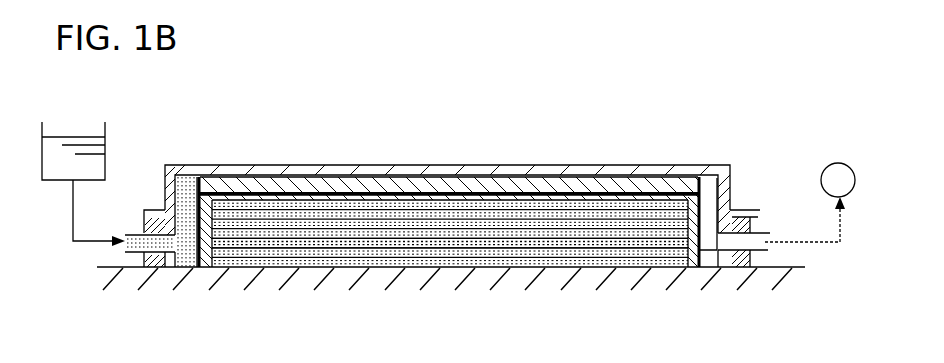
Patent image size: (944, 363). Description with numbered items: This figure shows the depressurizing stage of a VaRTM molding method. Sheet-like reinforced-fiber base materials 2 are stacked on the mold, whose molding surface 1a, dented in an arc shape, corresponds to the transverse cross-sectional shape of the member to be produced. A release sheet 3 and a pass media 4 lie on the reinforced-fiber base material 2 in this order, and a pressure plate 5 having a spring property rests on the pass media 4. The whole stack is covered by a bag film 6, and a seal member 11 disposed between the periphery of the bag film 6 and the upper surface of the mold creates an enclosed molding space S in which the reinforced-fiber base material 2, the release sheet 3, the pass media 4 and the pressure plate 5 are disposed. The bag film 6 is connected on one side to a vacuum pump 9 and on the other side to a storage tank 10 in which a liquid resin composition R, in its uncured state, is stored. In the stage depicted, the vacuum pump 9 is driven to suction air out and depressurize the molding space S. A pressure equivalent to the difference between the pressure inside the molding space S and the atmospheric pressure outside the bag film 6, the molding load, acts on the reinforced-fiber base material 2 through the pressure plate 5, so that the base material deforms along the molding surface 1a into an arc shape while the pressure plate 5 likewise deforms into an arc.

The molding surface 1a is at (805, 266).
The reinforced-fiber base material 2 is at (260, 266).
The release sheet 3 is at (313, 190).
The pass media 4 is at (395, 190).
The pressure plate 5 is at (480, 178).
The bag film 6 is at (545, 165).
The vacuum pump 9 is at (835, 163).
The storage tank 10 is at (105, 162).
The seal member 11 is at (135, 256).
The liquid resin composition R is at (55, 157).
The molding space S is at (468, 242).